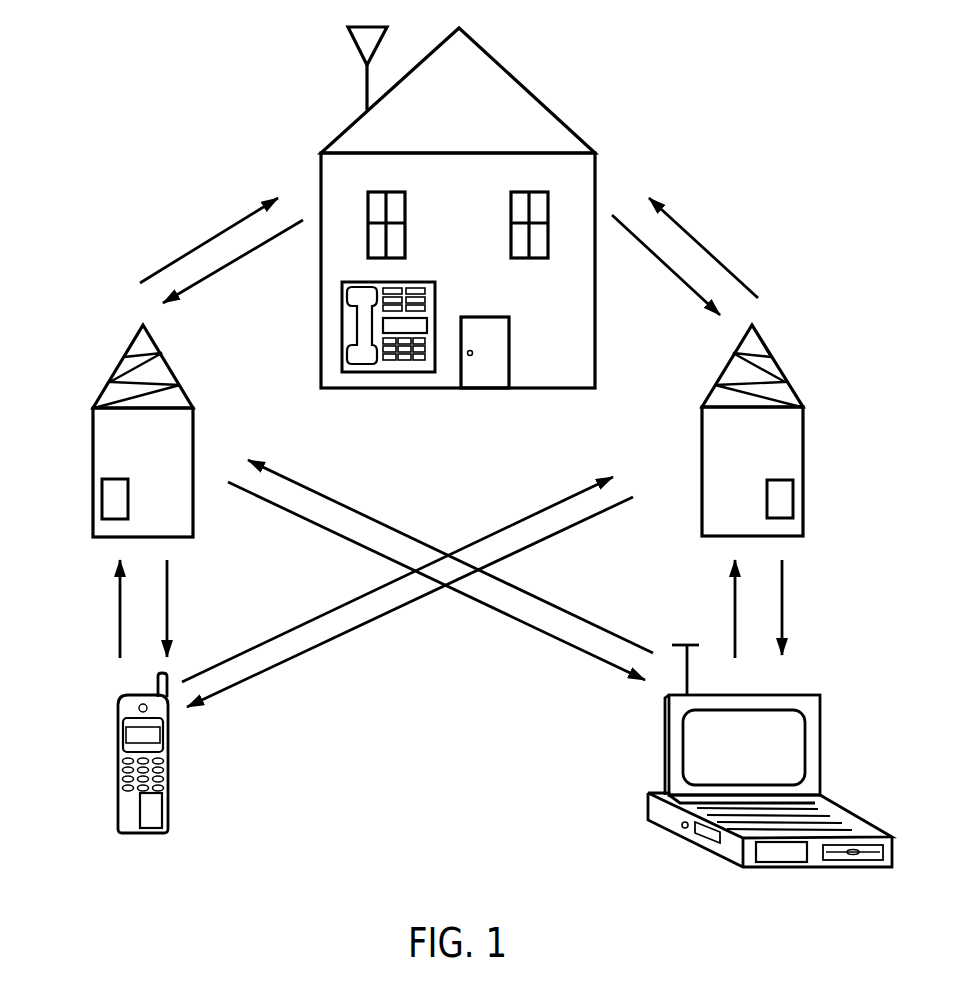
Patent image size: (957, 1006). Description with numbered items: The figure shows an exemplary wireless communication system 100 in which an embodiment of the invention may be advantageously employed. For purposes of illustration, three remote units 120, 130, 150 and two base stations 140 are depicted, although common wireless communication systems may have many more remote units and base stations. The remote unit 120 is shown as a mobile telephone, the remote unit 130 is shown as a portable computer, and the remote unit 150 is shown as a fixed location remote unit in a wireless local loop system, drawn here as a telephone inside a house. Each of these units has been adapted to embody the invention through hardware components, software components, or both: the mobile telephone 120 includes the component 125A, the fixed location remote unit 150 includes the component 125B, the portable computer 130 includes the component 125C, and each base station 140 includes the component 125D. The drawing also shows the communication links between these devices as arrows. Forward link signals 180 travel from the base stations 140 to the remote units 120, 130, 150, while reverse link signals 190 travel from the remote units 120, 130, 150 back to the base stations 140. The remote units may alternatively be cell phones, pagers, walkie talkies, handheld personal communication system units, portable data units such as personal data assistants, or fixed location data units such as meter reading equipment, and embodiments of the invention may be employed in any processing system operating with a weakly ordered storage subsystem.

The wireless communication system 100 is at (119, 36).
The remote unit 120 is at (120, 705).
The component 125A is at (153, 815).
The component 125B is at (415, 325).
The component 125C is at (788, 852).
The component 125D is at (107, 497).
The remote unit 130 is at (798, 695).
The base station 140 is at (120, 365).
The remote unit 150 is at (342, 338).
The forward link signal 180 is at (215, 235).
The reverse link signal 190 is at (218, 272).